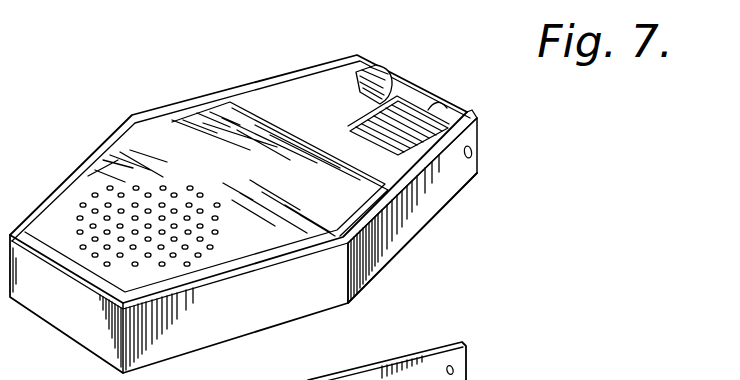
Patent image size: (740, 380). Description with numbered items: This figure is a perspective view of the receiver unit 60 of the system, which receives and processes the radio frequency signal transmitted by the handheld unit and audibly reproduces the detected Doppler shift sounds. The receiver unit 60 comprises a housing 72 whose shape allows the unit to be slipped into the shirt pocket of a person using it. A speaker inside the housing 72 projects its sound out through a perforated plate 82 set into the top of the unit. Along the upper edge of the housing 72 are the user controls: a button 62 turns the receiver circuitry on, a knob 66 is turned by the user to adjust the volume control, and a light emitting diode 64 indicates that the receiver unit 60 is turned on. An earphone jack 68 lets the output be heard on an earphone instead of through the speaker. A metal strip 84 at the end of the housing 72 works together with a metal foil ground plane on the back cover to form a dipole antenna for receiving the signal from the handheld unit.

The receiver unit 60 is at (96, 120).
The button 62 is at (373, 121).
The light emitting diode 64 is at (418, 97).
The knob 66 is at (377, 73).
The earphone jack 68 is at (446, 109).
The housing 72 is at (273, 92).
The perforated plate 82 is at (285, 203).
The metal strip 84 is at (435, 207).